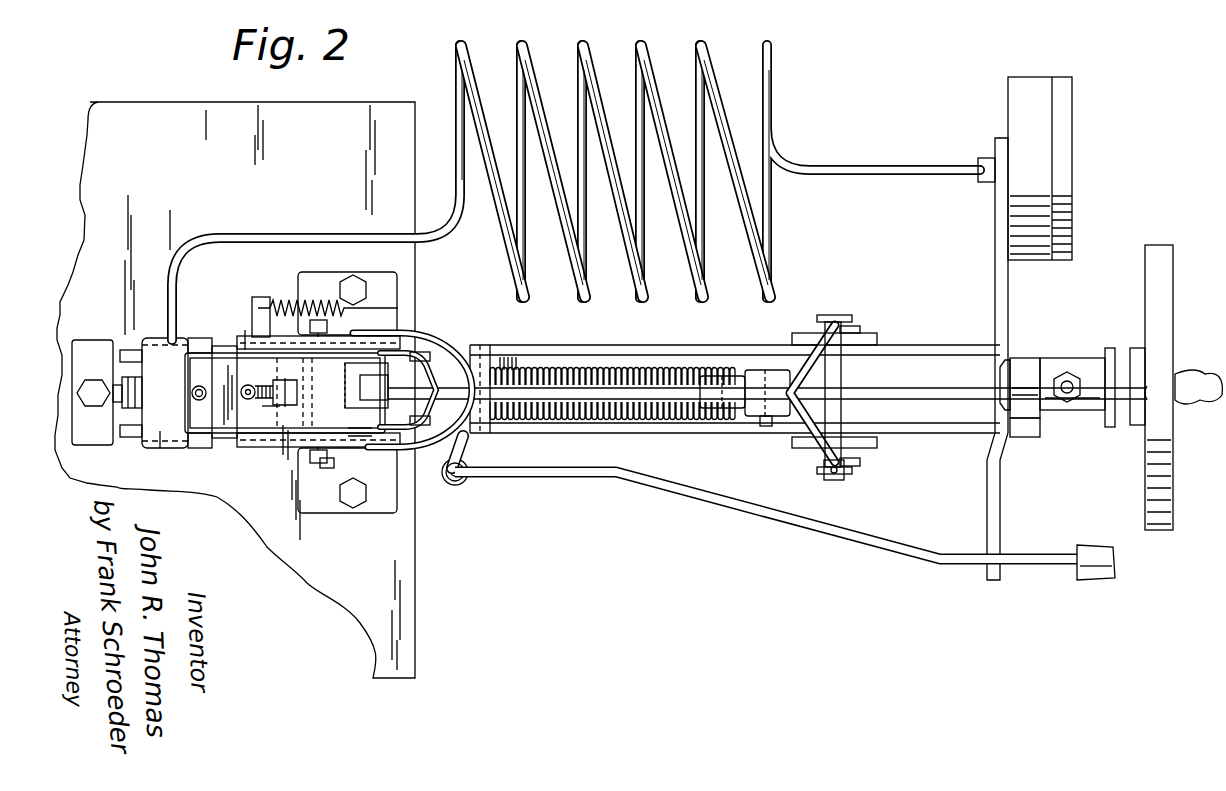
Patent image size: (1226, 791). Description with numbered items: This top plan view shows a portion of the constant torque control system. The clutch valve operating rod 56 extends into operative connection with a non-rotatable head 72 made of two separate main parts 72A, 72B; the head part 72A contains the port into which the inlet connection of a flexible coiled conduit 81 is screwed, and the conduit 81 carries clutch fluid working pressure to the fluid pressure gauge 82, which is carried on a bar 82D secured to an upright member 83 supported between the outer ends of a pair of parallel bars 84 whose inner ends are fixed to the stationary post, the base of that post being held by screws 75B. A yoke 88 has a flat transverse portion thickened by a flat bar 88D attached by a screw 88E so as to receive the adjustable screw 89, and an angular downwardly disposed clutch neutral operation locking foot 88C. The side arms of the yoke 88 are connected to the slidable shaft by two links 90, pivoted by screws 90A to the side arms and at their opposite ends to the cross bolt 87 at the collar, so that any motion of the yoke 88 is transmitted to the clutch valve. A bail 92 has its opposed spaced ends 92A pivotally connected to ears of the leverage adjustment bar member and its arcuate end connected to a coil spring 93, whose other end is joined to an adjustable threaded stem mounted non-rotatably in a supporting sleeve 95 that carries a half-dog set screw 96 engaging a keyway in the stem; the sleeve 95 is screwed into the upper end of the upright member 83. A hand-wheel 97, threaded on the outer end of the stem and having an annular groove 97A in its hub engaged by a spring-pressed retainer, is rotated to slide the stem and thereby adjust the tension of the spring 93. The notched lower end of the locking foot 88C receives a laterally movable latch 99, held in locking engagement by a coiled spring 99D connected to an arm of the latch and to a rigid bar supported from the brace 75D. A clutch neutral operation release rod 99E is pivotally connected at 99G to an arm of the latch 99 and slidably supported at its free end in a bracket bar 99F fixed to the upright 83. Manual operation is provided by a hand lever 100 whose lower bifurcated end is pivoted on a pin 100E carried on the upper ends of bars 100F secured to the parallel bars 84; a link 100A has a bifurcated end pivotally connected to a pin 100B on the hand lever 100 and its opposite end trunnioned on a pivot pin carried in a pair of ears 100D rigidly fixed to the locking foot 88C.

The clutch valve operating rod 56 is at (118, 402).
The non-rotatable head 72 is at (158, 338).
The head part 72A is at (160, 445).
The head part 72B is at (203, 447).
The screws 75B is at (93, 385).
The brace 75D is at (130, 440).
The flexible coiled conduit 81 is at (690, 68).
The fluid pressure gauge 82 is at (1020, 88).
The bar 82D is at (995, 240).
The upright member 83 is at (1022, 380).
The parallel bars 84 is at (942, 346).
The cross bolt 87 is at (428, 356).
The yoke 88 is at (222, 404).
The clutch neutral operation locking foot 88C is at (468, 445).
The flat bar 88D is at (276, 410).
The screw 88E is at (213, 380).
The adjustable screw 89 is at (255, 376).
The links 90 is at (330, 330).
The screws 90A is at (318, 463).
The bail 92 is at (455, 358).
The opposed spaced ends of bail 92A is at (320, 348).
The coil spring 93 is at (565, 370).
The supporting sleeve 95 is at (1090, 365).
The half-dog set screw 96 is at (1067, 372).
The hand-wheel 97 is at (1148, 268).
The annular groove 97A is at (1118, 352).
The latch 99 is at (465, 450).
The coiled spring 99D is at (285, 303).
The clutch neutral operation release rod 99E is at (902, 535).
The bracket bar 99F is at (990, 493).
The pivotal connection 99G is at (458, 485).
The hand lever 100 is at (728, 385).
The link 100A is at (640, 388).
The pin 100B is at (770, 428).
The ears 100D is at (372, 372).
The pin 100E is at (830, 470).
The bars 100F is at (862, 333).